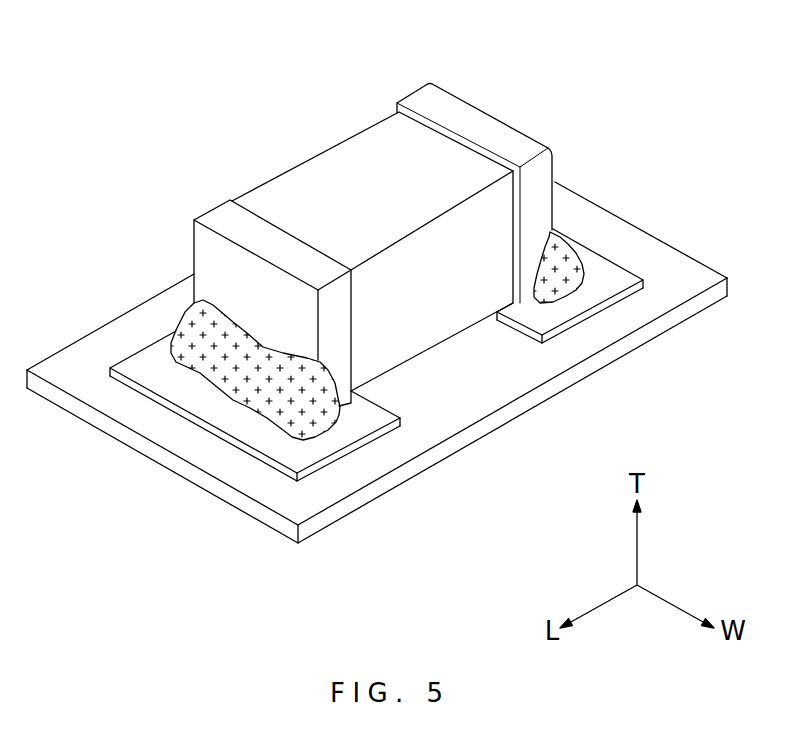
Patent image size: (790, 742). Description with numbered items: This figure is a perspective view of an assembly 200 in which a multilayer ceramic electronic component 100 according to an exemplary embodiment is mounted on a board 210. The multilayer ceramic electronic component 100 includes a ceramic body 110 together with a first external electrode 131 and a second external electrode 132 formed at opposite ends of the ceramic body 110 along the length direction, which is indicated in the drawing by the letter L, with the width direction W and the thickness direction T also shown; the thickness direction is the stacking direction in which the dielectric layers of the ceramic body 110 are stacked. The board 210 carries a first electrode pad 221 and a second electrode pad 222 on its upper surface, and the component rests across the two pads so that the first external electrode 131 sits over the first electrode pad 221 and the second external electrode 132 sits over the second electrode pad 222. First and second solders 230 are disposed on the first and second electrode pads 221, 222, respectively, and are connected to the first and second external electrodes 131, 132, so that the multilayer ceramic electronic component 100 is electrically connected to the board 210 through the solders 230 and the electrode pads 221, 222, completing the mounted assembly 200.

The assembly 200 is at (148, 53).
The multilayer ceramic electronic component 100 is at (351, 134).
The ceramic body 110 is at (328, 174).
The first external electrode 131 is at (225, 222).
The second external electrode 132 is at (423, 103).
The board 210 is at (487, 380).
The first electrode pad 221 is at (350, 432).
The second electrode pad 222 is at (590, 290).
The first and second solders 230 is at (242, 368).